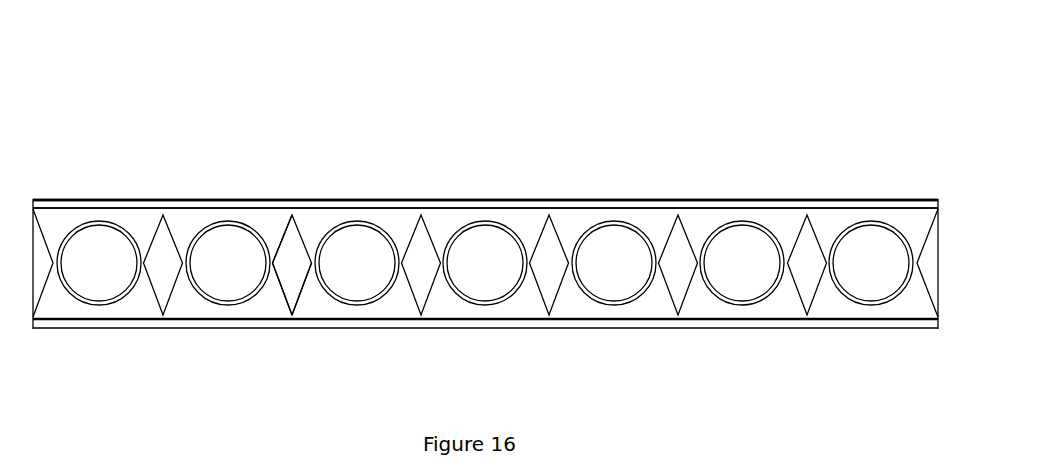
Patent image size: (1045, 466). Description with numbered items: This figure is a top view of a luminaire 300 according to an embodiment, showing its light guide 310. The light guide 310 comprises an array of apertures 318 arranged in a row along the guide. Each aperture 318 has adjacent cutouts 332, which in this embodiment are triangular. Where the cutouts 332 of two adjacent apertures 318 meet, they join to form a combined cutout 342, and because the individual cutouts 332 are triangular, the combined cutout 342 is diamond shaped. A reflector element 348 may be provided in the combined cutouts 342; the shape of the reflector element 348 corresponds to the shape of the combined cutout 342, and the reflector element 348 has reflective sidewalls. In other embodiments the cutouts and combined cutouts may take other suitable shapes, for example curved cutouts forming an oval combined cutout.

The luminaire 300 is at (310, 97).
The light guide 310 is at (550, 208).
The apertures 318 is at (208, 274).
The cutouts 332 is at (284, 299).
The combined cutout 342 is at (310, 273).
The reflector element 348 is at (283, 247).